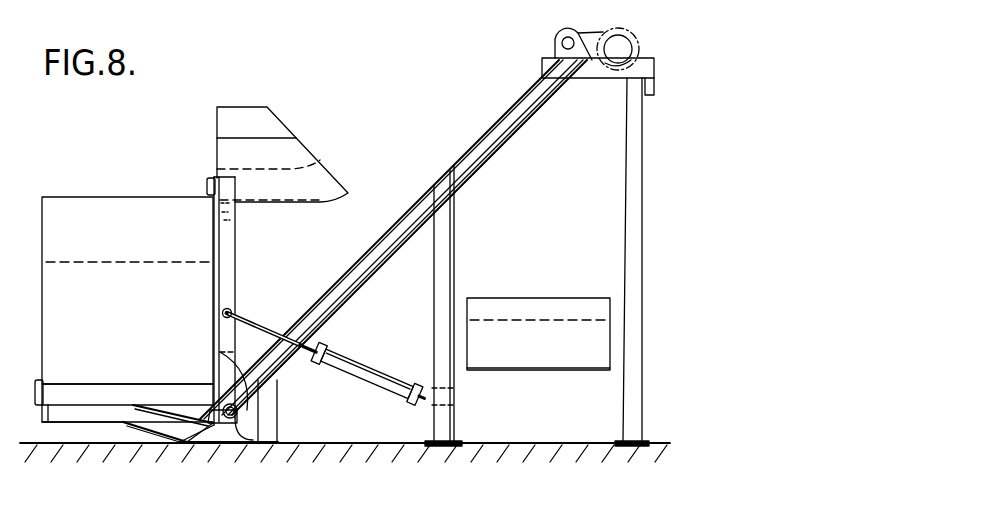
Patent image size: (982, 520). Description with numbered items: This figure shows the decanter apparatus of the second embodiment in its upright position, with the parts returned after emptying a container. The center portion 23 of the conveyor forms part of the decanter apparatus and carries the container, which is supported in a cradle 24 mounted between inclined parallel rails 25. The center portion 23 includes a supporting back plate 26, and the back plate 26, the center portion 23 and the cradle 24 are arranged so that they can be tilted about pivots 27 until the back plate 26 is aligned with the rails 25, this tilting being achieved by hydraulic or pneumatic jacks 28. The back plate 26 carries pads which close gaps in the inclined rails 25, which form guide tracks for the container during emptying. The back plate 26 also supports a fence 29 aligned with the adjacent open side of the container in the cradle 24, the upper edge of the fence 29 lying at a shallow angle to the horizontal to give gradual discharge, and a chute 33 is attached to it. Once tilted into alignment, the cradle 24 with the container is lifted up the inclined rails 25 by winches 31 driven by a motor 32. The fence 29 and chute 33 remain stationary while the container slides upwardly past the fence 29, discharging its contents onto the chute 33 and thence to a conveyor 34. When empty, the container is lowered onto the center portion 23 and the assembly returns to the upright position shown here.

The center portion 23 is at (88, 413).
The cradle 24 is at (51, 390).
The inclined parallel rails 25 is at (508, 124).
The supporting back plate 26 is at (233, 273).
The pivots 27 is at (240, 412).
The hydraulic or pneumatic jacks 28 is at (375, 368).
The fence 29 is at (213, 233).
The winches 31 is at (613, 70).
The motor 32 is at (556, 44).
The chute 33 is at (333, 175).
The conveyor 34 is at (555, 352).